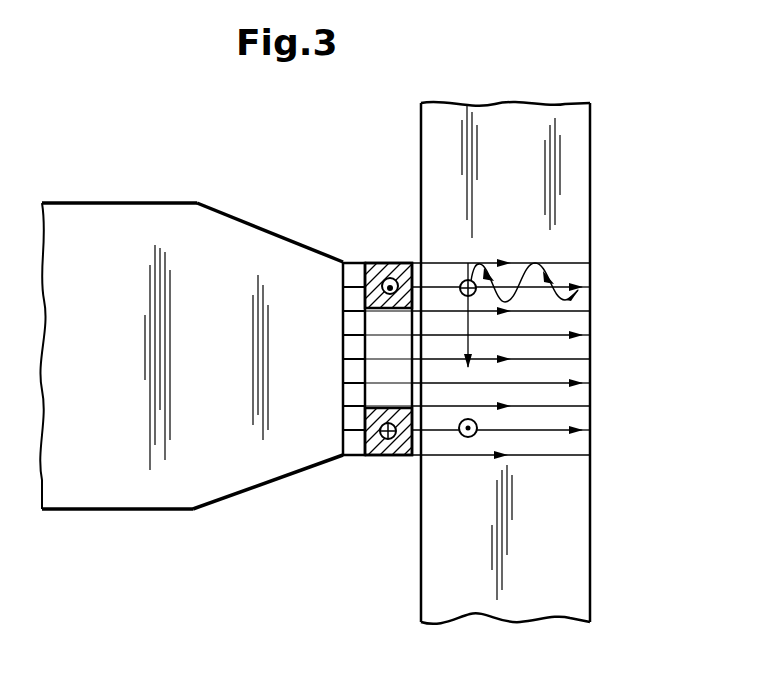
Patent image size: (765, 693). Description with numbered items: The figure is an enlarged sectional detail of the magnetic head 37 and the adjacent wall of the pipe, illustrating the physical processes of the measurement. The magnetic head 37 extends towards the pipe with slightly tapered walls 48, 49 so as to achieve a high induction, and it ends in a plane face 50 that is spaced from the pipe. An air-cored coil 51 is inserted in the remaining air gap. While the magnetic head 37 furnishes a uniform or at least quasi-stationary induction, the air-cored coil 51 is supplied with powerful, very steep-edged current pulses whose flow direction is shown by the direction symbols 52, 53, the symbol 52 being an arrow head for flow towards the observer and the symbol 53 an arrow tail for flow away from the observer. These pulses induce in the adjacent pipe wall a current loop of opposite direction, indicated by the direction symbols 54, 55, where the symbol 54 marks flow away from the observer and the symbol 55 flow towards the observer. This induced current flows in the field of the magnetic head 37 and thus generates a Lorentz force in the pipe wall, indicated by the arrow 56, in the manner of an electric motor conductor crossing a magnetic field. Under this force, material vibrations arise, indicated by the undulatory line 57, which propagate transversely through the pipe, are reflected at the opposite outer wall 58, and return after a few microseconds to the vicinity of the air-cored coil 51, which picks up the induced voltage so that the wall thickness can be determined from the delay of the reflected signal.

The magnetic head 37 is at (97, 240).
The tapered wall 48 is at (214, 505).
The tapered wall 49 is at (242, 220).
The plane face 50 is at (340, 440).
The air-cored coil 51 is at (373, 268).
The direction symbol 52 is at (393, 278).
The direction symbol 53 is at (390, 446).
The direction symbol 54 is at (471, 284).
The direction symbol 55 is at (463, 438).
The arrow 56 is at (468, 327).
The undulatory line 57 is at (545, 272).
The opposite outer wall 58 is at (590, 262).